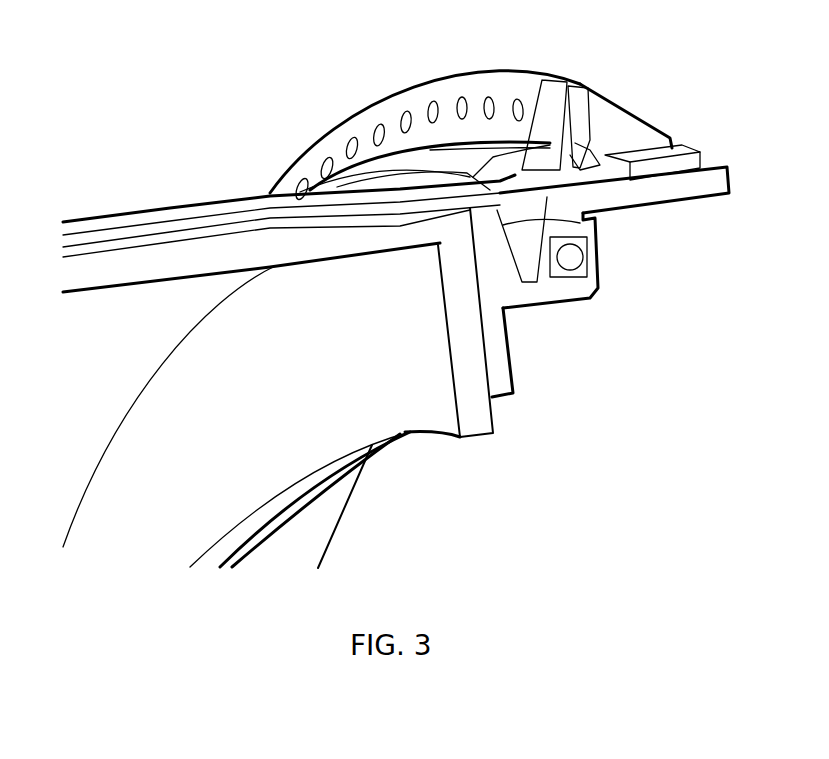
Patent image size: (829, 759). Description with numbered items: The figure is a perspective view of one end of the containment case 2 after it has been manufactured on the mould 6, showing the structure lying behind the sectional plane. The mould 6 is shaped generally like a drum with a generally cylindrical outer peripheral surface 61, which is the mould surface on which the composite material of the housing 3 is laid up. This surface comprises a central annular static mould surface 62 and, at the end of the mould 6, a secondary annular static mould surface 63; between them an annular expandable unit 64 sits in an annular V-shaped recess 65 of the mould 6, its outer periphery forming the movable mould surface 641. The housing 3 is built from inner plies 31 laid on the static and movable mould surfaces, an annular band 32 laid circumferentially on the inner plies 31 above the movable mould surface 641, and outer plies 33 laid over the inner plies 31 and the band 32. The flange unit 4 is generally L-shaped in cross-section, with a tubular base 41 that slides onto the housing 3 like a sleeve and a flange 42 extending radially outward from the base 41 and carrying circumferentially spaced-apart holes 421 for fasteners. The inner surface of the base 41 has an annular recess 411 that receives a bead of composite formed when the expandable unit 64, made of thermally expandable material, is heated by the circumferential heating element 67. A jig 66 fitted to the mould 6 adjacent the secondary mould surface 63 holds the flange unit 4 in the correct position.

The containment case 2 is at (394, 312).
The housing 3 is at (287, 248).
The inner plies 31 is at (93, 250).
The outer plies 33 is at (115, 233).
The outer peripheral surface 61 is at (160, 243).
The central annular static mould surface 62 is at (207, 238).
The flange unit 4 is at (425, 113).
The base 41 is at (373, 167).
The flange 42 is at (310, 150).
The holes 421 is at (490, 97).
The annular recess 411 is at (438, 247).
The annular band 32 is at (522, 187).
The movable mould surface 641 is at (525, 197).
The secondary annular static mould surface 63 is at (575, 145).
The jig 66 is at (635, 128).
The annular V-shaped recess 65 is at (580, 222).
The circumferential heating element 67 is at (572, 258).
The expandable unit 64 is at (530, 273).
The mould 6 is at (396, 317).